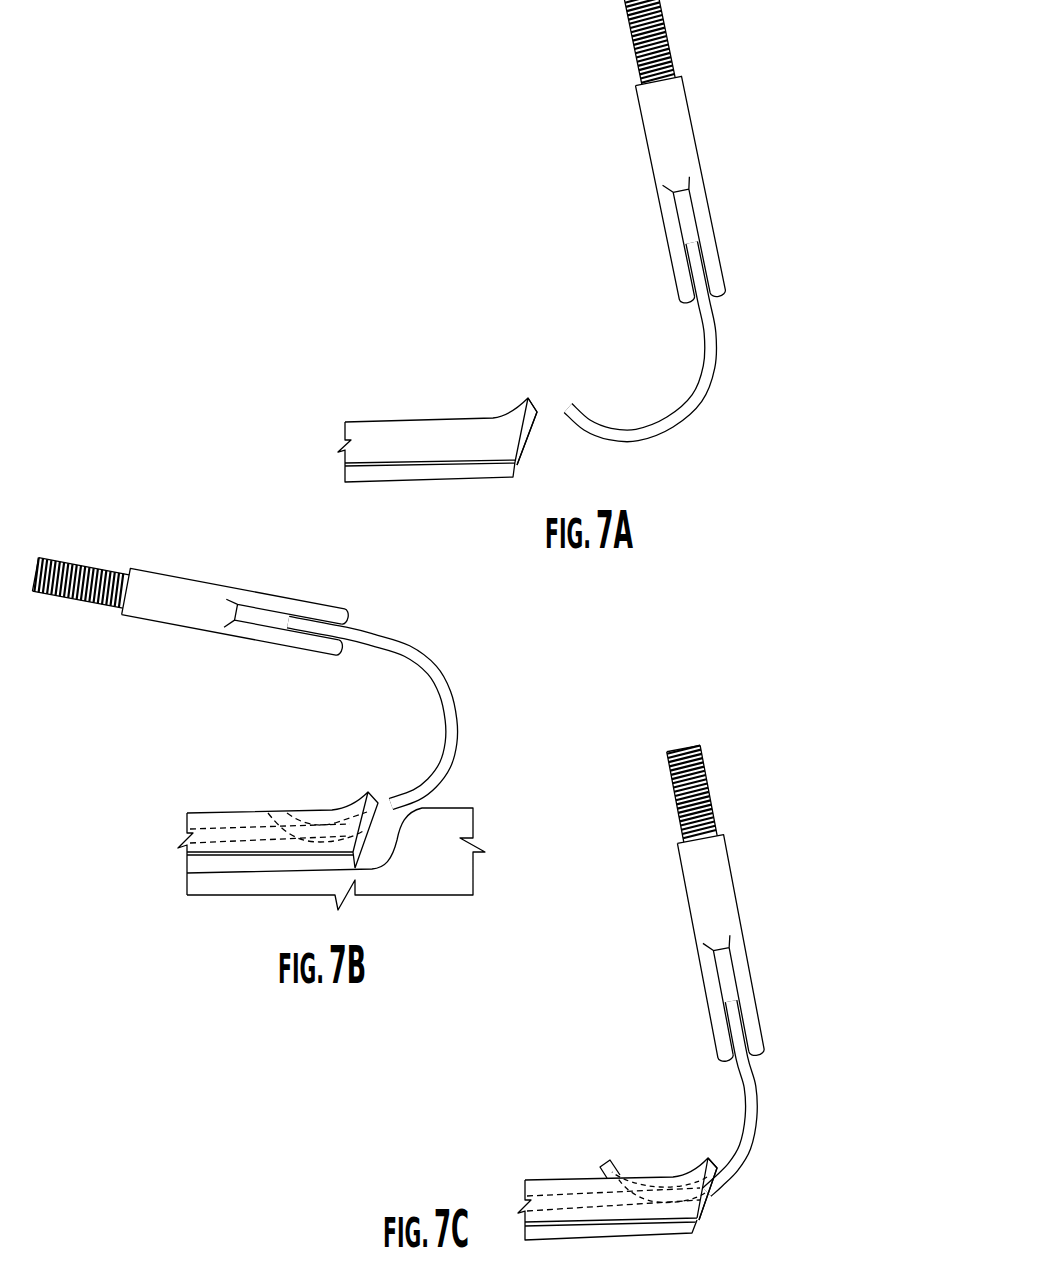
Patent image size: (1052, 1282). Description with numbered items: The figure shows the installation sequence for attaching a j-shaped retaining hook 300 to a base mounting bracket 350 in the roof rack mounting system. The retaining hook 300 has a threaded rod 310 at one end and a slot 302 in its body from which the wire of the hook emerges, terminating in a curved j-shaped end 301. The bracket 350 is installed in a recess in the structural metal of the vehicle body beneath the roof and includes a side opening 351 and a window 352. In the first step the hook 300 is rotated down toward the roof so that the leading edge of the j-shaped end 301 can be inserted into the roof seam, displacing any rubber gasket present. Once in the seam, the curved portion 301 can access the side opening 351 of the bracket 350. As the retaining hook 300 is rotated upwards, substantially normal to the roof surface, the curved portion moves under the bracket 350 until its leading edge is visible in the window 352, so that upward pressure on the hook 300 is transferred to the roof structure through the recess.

In FIG. 7A, the j-shaped retaining hook 300 is at (632, 208).
In FIG. 7B, the j-shaped retaining hook 300 is at (216, 652).
In FIG. 7C, the j-shaped retaining hook 300 is at (680, 960).
In FIG. 7A, the j-shaped end 301 is at (595, 425).
In FIG. 7B, the j-shaped end 301 is at (425, 782).
In FIG. 7C, the j-shaped end 301 is at (617, 1160).
In FIG. 7A, the slot in tool body 302 is at (698, 262).
In FIG. 7B, the slot in tool body 302 is at (310, 627).
In FIG. 7C, the slot in tool body 302 is at (740, 1034).
In FIG. 7A, the threaded rod 310 is at (618, 52).
In FIG. 7B, the threaded rod 310 is at (91, 546).
In FIG. 7C, the threaded rod 310 is at (665, 808).
In FIG. 7A, the base mounting bracket 350 is at (430, 415).
In FIG. 7B, the base mounting bracket 350 is at (228, 812).
In FIG. 7C, the base mounting bracket 350 is at (553, 1178).
In FIG. 7A, the side opening 351 is at (540, 440).
In FIG. 7C, the side opening 351 is at (722, 1196).
In FIG. 7C, the window 352 is at (627, 1175).